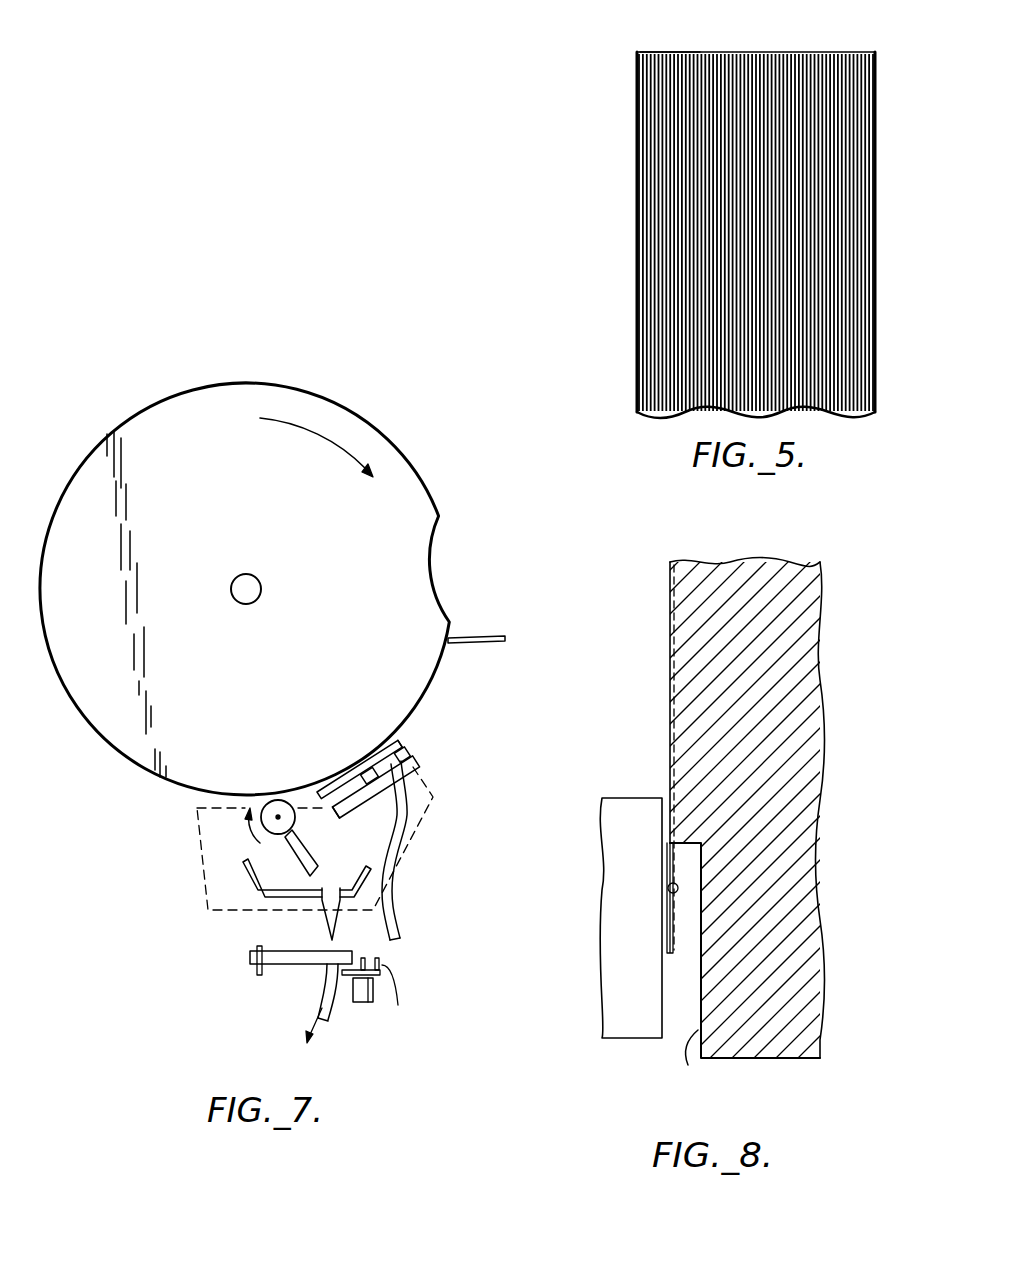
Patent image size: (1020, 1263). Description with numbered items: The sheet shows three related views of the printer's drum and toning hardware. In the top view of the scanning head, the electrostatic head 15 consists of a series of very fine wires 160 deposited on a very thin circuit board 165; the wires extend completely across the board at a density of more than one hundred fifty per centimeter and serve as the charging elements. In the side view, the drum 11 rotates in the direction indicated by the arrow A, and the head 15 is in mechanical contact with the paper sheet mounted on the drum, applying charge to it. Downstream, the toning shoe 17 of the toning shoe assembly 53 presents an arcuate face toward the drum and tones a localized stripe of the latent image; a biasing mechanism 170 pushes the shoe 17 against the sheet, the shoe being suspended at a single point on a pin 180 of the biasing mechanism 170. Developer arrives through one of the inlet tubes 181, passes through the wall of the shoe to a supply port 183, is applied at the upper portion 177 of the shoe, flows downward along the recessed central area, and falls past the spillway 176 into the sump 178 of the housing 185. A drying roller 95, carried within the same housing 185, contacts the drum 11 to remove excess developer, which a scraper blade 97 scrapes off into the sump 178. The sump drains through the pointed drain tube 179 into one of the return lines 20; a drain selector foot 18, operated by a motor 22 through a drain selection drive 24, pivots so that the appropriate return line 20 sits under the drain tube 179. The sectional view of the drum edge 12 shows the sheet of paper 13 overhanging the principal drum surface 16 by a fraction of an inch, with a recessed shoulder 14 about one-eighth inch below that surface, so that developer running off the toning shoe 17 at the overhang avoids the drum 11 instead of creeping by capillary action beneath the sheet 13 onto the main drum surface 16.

In FIG. 7, the drum 11 is at (382, 447).
In FIG. 8, the drum 11 is at (777, 1040).
In FIG. 8, the edge of the drum 12 is at (660, 1055).
In FIG. 8, the sheet of paper 13 is at (668, 892).
In FIG. 8, the recessed shoulder 14 is at (688, 1065).
In FIG. 5, the electrostatic head 15 is at (862, 41).
In FIG. 7, the electrostatic head 15 is at (471, 636).
In FIG. 8, the principal drum surface 16 is at (677, 740).
In FIG. 7, the toning shoe 17 is at (410, 740).
In FIG. 8, the toning shoe 17 is at (647, 807).
In FIG. 7, the drain selector foot 18 is at (300, 960).
In FIG. 7, the return lines 20 is at (333, 1007).
In FIG. 7, the motor 22 is at (365, 1002).
In FIG. 7, the drain selection drive 24 is at (407, 948).
In FIG. 7, the toning shoe assembly 53 is at (183, 853).
In FIG. 7, the drying roller 95 is at (270, 805).
In FIG. 7, the scraper blade 97 is at (303, 867).
In FIG. 5, the wires 160 is at (649, 82).
In FIG. 5, the circuit board 165 is at (692, 52).
In FIG. 7, the biasing mechanism 170 is at (340, 815).
In FIG. 7, the spillway 176 is at (312, 788).
In FIG. 7, the upper portion of the shoe 177 is at (392, 736).
In FIG. 7, the sump 178 is at (248, 887).
In FIG. 7, the drain tube 179 is at (325, 918).
In FIG. 7, the pin 180 is at (365, 772).
In FIG. 7, the inlet tubes 181 is at (398, 910).
In FIG. 7, the supply port 183 is at (407, 757).
In FIG. 7, the housing 185 is at (417, 832).
In FIG. 7, the direction of rotation arrow A is at (323, 440).